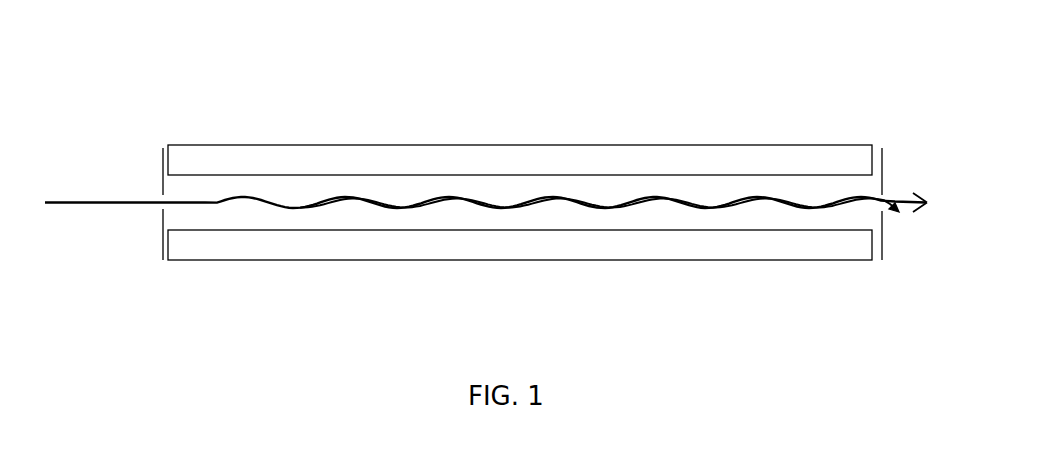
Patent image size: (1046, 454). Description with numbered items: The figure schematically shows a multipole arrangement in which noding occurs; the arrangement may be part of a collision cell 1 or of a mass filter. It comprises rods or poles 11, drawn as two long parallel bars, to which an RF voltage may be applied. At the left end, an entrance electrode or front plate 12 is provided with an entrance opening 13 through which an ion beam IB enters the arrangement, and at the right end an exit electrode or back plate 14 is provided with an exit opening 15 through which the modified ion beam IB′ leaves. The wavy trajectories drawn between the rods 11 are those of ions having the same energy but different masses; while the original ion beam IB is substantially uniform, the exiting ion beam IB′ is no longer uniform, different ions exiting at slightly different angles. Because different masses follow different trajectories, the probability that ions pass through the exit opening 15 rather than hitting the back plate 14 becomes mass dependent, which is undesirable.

The collision cell 1 is at (762, 73).
The rods 11 is at (283, 145).
The entrance electrode 12 is at (161, 236).
The entrance opening 13 is at (160, 197).
The exit electrode 14 is at (884, 236).
The exit opening 15 is at (891, 192).
The ion beam IB is at (97, 205).
The modified ion beam IB′ is at (906, 197).